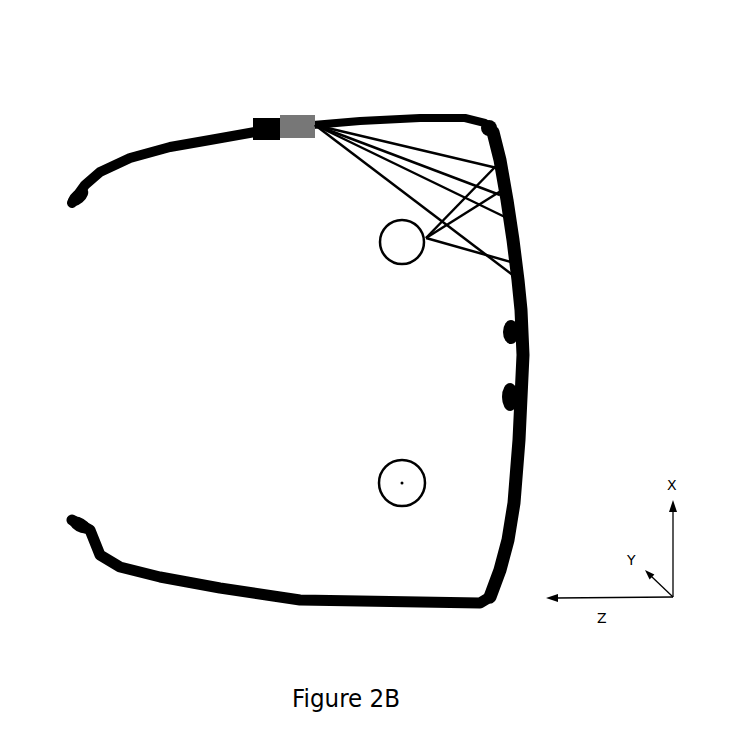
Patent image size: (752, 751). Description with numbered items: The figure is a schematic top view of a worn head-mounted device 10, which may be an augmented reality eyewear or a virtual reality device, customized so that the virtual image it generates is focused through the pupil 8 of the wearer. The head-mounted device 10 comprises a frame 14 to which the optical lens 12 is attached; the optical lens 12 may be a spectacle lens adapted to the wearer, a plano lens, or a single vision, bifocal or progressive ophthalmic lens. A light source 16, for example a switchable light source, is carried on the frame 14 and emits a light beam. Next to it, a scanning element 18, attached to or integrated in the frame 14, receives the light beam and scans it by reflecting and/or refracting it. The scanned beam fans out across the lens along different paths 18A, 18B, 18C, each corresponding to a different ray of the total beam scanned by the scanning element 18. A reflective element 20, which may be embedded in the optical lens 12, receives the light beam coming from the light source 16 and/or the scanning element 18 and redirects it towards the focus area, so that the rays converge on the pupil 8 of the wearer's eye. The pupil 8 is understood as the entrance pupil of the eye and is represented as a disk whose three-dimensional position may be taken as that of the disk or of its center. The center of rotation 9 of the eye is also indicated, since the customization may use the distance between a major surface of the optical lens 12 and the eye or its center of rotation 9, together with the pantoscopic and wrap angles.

The pupil 8 is at (426, 245).
The center of rotation 9 is at (403, 243).
The head-mounted device 10 is at (558, 366).
The optical lens 12 is at (502, 143).
The frame 14 is at (185, 140).
The light source 16 is at (267, 120).
The scanning element 18 is at (308, 125).
The path 18A is at (433, 152).
The path 18B is at (488, 197).
The path 18C is at (483, 250).
The reflective element 20 is at (510, 298).